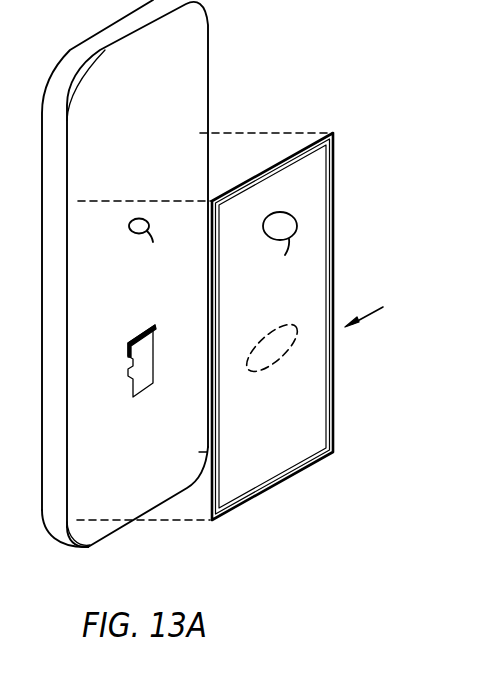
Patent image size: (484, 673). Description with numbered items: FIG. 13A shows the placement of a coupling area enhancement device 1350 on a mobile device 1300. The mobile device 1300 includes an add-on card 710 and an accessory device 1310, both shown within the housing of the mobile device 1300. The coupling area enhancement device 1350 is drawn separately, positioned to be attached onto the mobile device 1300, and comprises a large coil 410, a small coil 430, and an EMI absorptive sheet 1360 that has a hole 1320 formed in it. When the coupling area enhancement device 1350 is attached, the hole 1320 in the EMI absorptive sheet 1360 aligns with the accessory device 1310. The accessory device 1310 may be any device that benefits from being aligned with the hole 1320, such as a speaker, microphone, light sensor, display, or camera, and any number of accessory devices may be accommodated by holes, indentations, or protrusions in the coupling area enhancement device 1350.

The mobile device 1300 is at (208, 63).
The accessory device 1310 is at (152, 245).
The add-on card 710 is at (147, 324).
The EMI absorptive sheet 1360 is at (334, 134).
The hole 1320 is at (276, 248).
The small coil 430 is at (274, 362).
The large coil 410 is at (324, 402).
The coupling area enhancement device 1350 is at (383, 307).